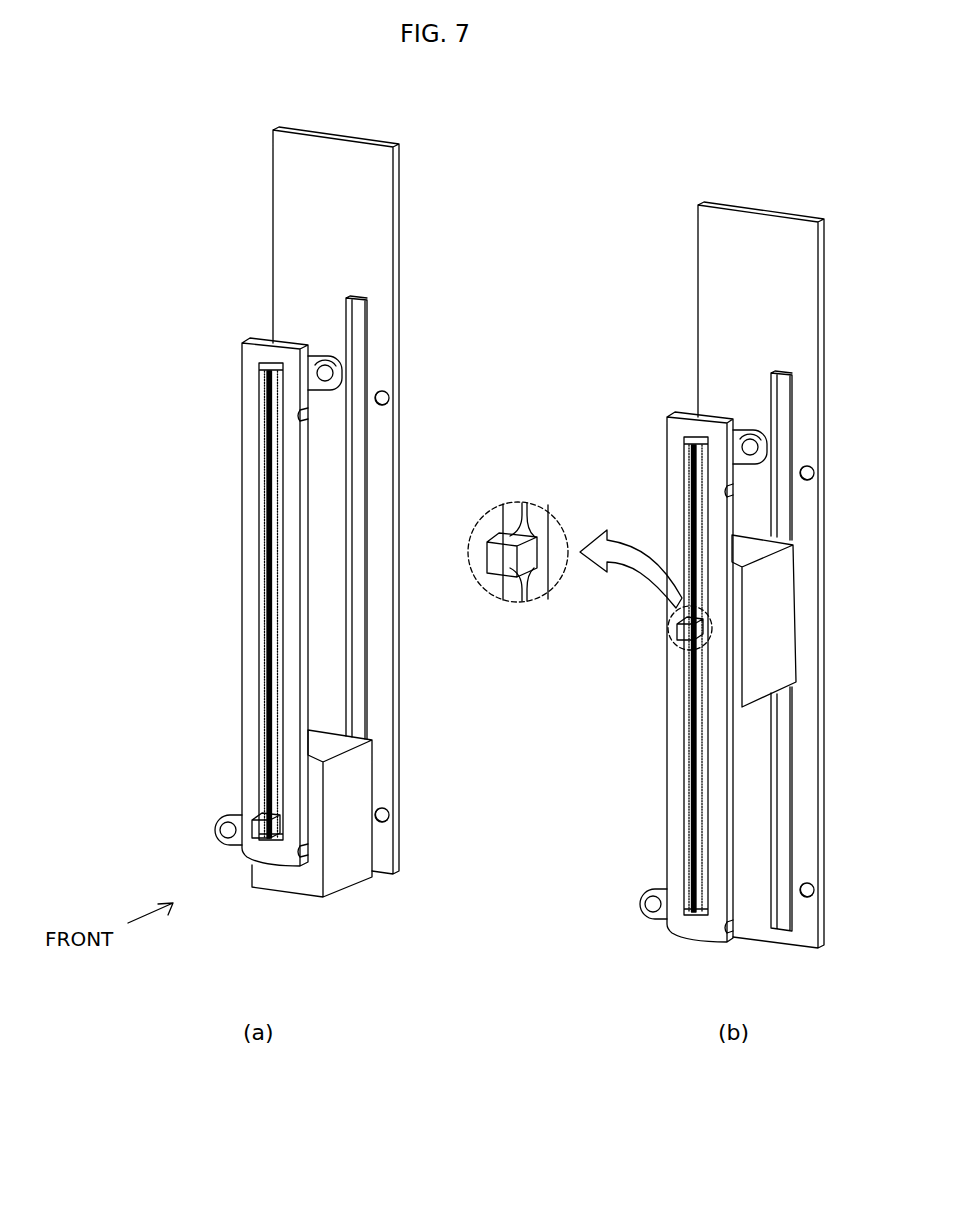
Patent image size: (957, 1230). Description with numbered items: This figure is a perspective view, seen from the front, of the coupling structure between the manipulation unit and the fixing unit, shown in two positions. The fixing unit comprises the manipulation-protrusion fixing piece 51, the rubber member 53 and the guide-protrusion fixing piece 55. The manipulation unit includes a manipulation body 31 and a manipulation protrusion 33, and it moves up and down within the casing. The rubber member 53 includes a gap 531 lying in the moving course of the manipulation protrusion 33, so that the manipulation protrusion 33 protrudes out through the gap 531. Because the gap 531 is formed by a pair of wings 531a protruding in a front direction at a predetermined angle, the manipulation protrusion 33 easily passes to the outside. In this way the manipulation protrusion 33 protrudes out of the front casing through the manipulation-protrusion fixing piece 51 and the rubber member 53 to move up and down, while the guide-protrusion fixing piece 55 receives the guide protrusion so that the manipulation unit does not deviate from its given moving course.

The guide-protrusion fixing piece 55 is at (289, 150).
The manipulation-protrusion fixing piece 51 is at (260, 341).
The rubber member 53 is at (251, 400).
The gap 531 is at (266, 570).
The wings 531a is at (263, 615).
The manipulation protrusion 33 is at (254, 823).
The manipulation body 31 is at (328, 869).